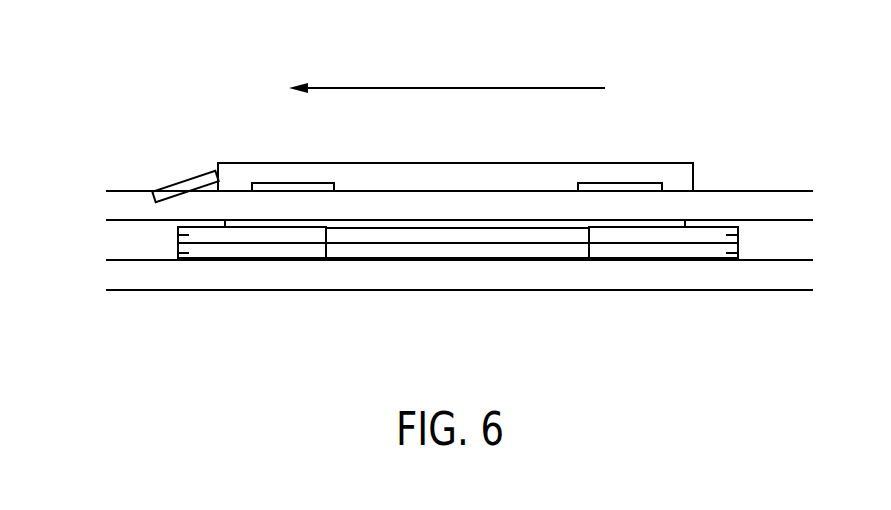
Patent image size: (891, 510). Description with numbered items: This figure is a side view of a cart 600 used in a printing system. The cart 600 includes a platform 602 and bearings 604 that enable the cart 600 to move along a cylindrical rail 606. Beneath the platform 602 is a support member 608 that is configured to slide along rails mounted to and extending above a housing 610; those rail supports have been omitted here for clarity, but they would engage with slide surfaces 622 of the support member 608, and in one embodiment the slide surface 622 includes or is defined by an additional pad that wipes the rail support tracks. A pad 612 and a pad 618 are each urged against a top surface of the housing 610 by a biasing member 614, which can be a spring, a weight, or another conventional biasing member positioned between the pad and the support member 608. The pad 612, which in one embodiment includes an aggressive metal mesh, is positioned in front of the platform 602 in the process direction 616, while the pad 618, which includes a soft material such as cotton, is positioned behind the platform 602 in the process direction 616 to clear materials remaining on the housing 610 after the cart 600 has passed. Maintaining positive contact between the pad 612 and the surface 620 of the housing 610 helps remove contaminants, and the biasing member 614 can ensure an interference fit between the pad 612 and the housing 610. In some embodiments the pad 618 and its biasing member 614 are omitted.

The cart 600 is at (640, 320).
The platform 602 is at (498, 162).
The bearings 604 is at (295, 187).
The cylindrical rail 606 is at (785, 190).
The support member 608 is at (398, 248).
The housing 610 is at (330, 291).
The pad 612 is at (178, 253).
The biasing member 614 is at (178, 235).
The process direction 616 is at (441, 87).
The pad 618 is at (726, 253).
The surface 620 is at (242, 261).
The slide surfaces 622 is at (468, 236).